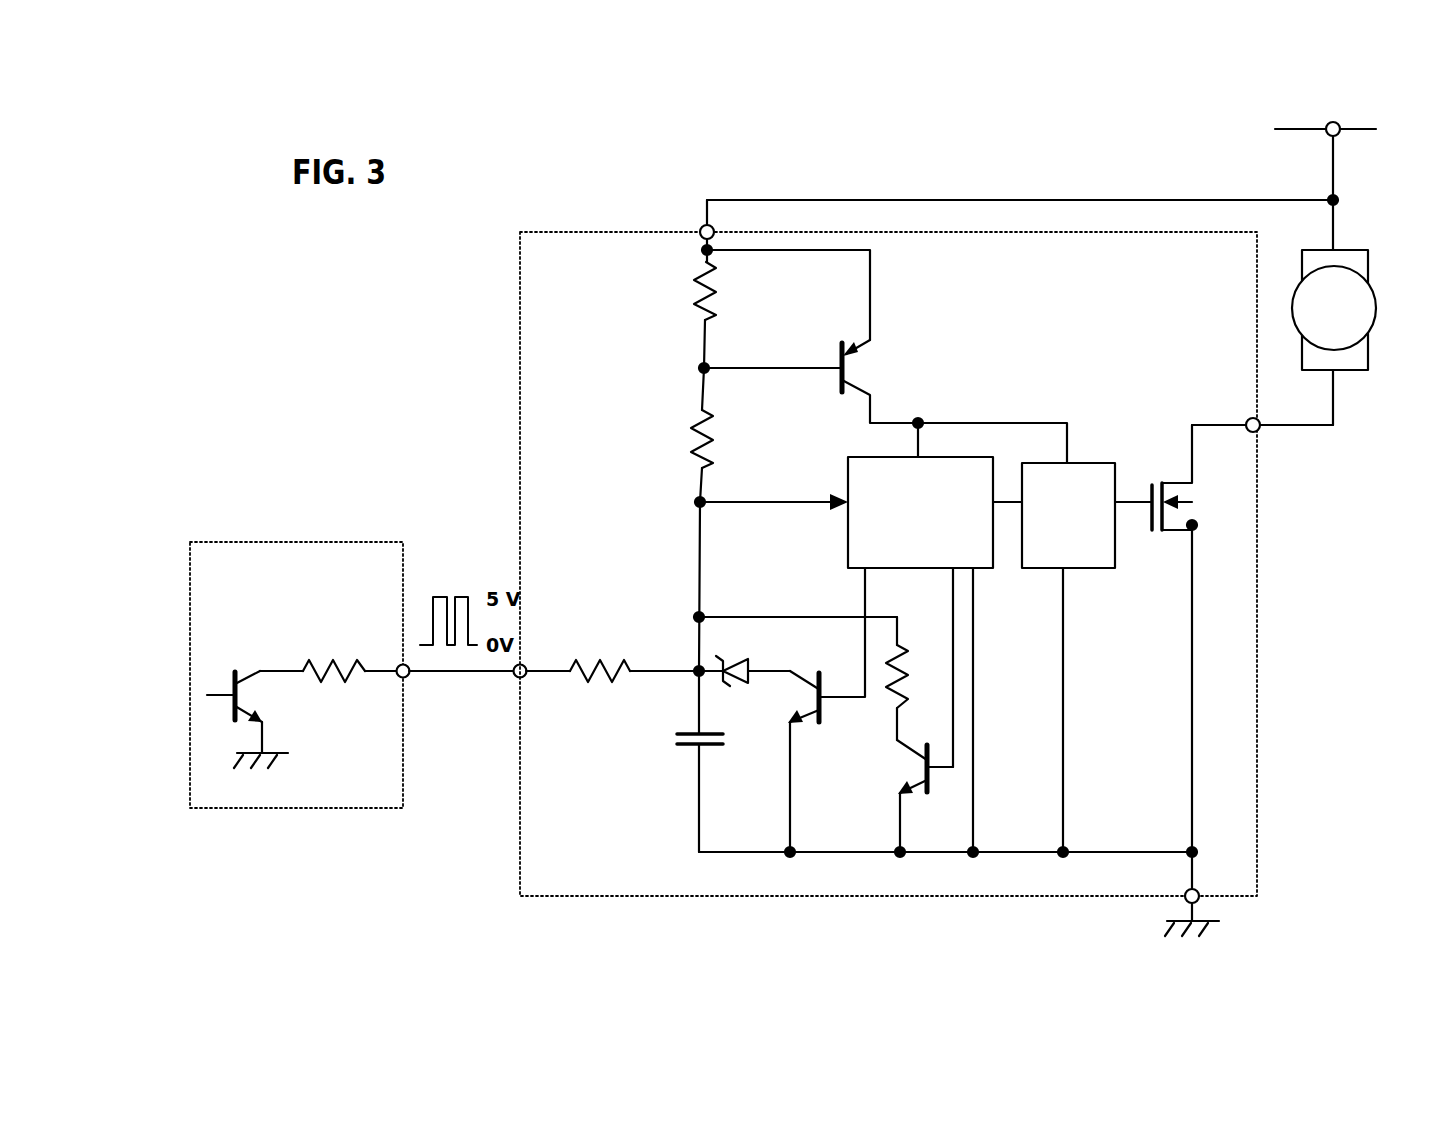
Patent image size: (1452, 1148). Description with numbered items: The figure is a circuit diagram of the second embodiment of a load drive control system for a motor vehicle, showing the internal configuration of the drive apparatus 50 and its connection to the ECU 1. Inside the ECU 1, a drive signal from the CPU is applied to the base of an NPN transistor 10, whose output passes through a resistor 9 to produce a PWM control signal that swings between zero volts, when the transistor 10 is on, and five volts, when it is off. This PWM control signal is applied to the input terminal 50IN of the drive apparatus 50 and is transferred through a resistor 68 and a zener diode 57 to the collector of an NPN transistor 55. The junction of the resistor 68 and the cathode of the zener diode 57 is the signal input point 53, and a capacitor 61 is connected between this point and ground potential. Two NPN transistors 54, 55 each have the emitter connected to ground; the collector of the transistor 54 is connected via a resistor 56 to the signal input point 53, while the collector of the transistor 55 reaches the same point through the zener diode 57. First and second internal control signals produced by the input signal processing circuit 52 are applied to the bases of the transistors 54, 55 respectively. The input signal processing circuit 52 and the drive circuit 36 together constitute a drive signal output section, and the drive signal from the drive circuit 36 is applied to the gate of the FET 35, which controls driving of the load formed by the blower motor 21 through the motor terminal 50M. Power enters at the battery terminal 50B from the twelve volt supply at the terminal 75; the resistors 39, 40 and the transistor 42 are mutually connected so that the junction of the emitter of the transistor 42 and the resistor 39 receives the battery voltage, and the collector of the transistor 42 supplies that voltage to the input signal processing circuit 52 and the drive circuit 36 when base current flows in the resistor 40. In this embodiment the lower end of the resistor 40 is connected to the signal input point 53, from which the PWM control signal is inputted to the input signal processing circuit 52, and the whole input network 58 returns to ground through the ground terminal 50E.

The ECU 1 is at (305, 536).
The resistor 9 is at (326, 660).
The NPN transistor 10 is at (241, 666).
The blower motor 21 is at (1368, 345).
The FET 35 is at (1172, 535).
The drive circuit 36 is at (1093, 458).
The resistor 39 is at (692, 311).
The resistor 40 is at (690, 448).
The transistor 42 is at (880, 357).
The drive apparatus 50 is at (1248, 655).
The battery terminal 50B is at (700, 225).
The ground terminal 50E is at (1205, 905).
The input terminal 50IN is at (510, 682).
The motor terminal 50M is at (1261, 434).
The input signal processing circuit 52 is at (838, 544).
The signal input point 53 is at (690, 661).
The NPN transistor 54 is at (896, 755).
The NPN transistor 55 is at (828, 715).
The resistor 56 is at (907, 700).
The zener diode 57 is at (748, 691).
The voltage divider line 58 is at (657, 562).
The capacitor 61 is at (723, 755).
The resistor 68 is at (600, 657).
The battery voltage terminal 75 is at (1310, 124).